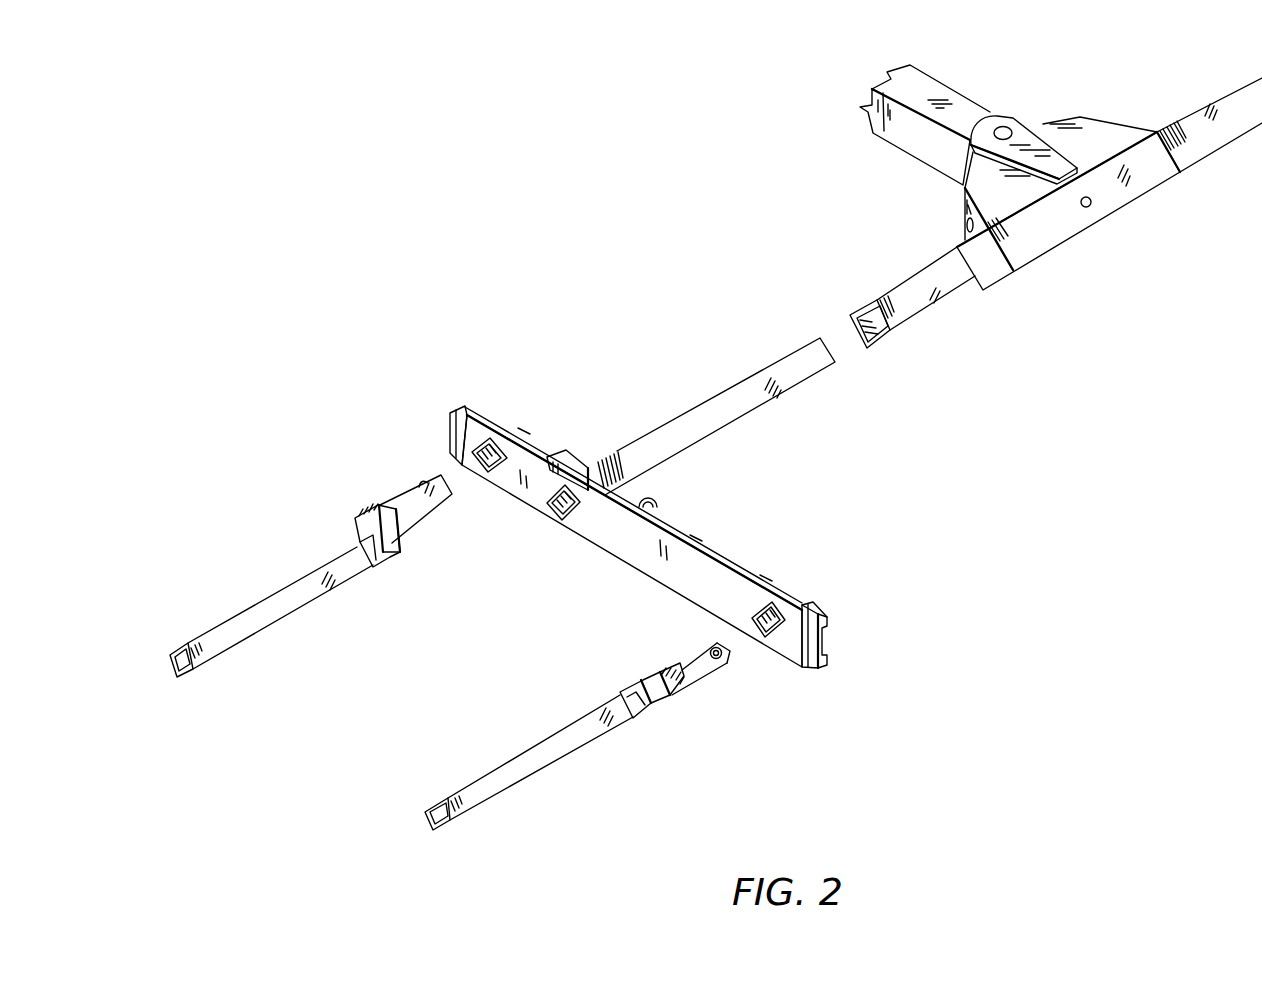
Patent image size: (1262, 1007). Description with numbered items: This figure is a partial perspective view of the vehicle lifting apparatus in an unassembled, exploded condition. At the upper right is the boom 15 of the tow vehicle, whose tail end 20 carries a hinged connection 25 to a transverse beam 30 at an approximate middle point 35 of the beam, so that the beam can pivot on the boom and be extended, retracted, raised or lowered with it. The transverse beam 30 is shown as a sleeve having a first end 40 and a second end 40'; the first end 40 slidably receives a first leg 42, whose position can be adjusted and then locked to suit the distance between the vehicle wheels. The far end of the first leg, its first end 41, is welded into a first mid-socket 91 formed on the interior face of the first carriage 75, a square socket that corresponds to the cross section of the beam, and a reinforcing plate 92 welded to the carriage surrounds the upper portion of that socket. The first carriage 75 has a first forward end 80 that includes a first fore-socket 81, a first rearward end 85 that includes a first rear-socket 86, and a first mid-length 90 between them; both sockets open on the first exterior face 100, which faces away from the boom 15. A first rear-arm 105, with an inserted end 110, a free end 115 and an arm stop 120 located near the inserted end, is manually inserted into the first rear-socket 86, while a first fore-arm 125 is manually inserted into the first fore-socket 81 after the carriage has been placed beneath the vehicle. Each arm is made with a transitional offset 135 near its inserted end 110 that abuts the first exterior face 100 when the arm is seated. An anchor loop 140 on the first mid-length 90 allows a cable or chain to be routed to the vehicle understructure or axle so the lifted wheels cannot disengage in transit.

The boom 15 is at (927, 88).
The tail end 20 is at (957, 176).
The connection 25 is at (1023, 138).
The transverse beam 30 is at (1130, 160).
The approximate middle point 35 is at (1047, 223).
The first end 40 is at (910, 295).
The second end 40' is at (1209, 102).
The first end of the first leg 41 is at (617, 463).
The first leg 42 is at (703, 420).
The first carriage 75 is at (628, 543).
The first forward end 80 is at (817, 610).
The first fore-socket 81 is at (765, 637).
The first rearward end 85 is at (477, 413).
The first rear-socket 86 is at (470, 467).
The first mid-length 90 is at (598, 525).
The first mid-socket 91 is at (553, 503).
The reinforcing plate 92 is at (563, 462).
The first exterior face 100 is at (727, 594).
The first rear-arm 105 is at (277, 607).
The inserted end 110 is at (446, 495).
The free end 115 is at (190, 650).
The arm stop 120 is at (425, 481).
The first fore-arm 125 is at (543, 753).
The transitional offset 135 is at (400, 548).
The anchor loop 140 is at (658, 503).